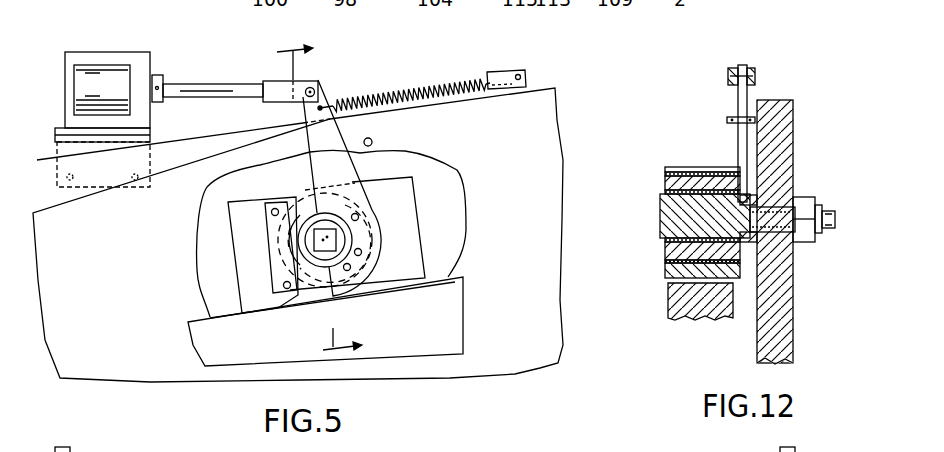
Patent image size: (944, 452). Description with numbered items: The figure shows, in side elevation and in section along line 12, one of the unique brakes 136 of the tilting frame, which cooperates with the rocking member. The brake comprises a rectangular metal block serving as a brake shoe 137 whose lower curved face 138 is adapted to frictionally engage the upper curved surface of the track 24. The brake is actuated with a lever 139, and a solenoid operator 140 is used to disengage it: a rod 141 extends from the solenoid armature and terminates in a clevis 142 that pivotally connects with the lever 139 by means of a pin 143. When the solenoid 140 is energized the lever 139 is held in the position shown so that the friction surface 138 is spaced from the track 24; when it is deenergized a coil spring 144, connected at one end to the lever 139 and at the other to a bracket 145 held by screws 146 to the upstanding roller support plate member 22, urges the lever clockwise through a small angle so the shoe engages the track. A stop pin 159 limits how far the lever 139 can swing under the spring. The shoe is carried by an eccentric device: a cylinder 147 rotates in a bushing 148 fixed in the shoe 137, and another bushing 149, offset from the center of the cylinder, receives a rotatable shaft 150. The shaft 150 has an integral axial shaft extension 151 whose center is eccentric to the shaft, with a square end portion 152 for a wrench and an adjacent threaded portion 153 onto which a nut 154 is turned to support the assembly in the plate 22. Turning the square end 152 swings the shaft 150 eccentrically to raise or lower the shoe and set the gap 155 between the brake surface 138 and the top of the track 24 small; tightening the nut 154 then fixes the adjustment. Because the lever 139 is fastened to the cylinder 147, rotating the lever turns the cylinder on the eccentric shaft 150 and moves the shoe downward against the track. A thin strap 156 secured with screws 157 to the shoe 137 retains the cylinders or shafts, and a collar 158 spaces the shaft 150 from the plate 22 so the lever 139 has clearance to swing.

In FIG. 5, the section line 12 is at (300, 203).
In FIG. 5, the upstanding roller support plate member 22 is at (552, 180).
In FIG. 12, the upstanding roller support plate member 22 is at (783, 117).
In FIG. 5, the track 24 is at (453, 310).
In FIG. 5, the brake 136 is at (404, 81).
In FIG. 5, the brake shoe 137 is at (413, 226).
In FIG. 5, the lower curved face 138 is at (382, 291).
In FIG. 5, the lever 139 is at (305, 133).
In FIG. 12, the lever 139 is at (740, 97).
In FIG. 5, the solenoid operator 140 is at (119, 51).
In FIG. 5, the rod 141 is at (186, 83).
In FIG. 5, the clevis 142 is at (303, 82).
In FIG. 12, the clevis 142 is at (750, 68).
In FIG. 5, the pin 143 is at (322, 106).
In FIG. 5, the coil spring 144 is at (446, 81).
In FIG. 5, the bracket 145 is at (520, 71).
In FIG. 5, the screws 146 is at (528, 80).
In FIG. 5, the cylinder 147 is at (312, 214).
In FIG. 5, the bushing 148 is at (207, 187).
In FIG. 5, the bushing 149 is at (303, 308).
In FIG. 5, the shaft 150 is at (305, 240).
In FIG. 12, the shaft 150 is at (672, 222).
In FIG. 5, the axial shaft extension 151 is at (333, 238).
In FIG. 12, the axial shaft extension 151 is at (797, 245).
In FIG. 5, the square end portion 152 is at (385, 211).
In FIG. 12, the square end portion 152 is at (835, 222).
In FIG. 12, the threaded portion 153 is at (821, 234).
In FIG. 12, the nut 154 is at (807, 196).
In FIG. 5, the gap 155 is at (417, 290).
In FIG. 5, the thin strap 156 is at (285, 268).
In FIG. 5, the screws 157 is at (247, 315).
In FIG. 12, the collar 158 is at (755, 195).
In FIG. 5, the stop pin 159 is at (372, 140).
In FIG. 12, the stop pin 159 is at (727, 120).